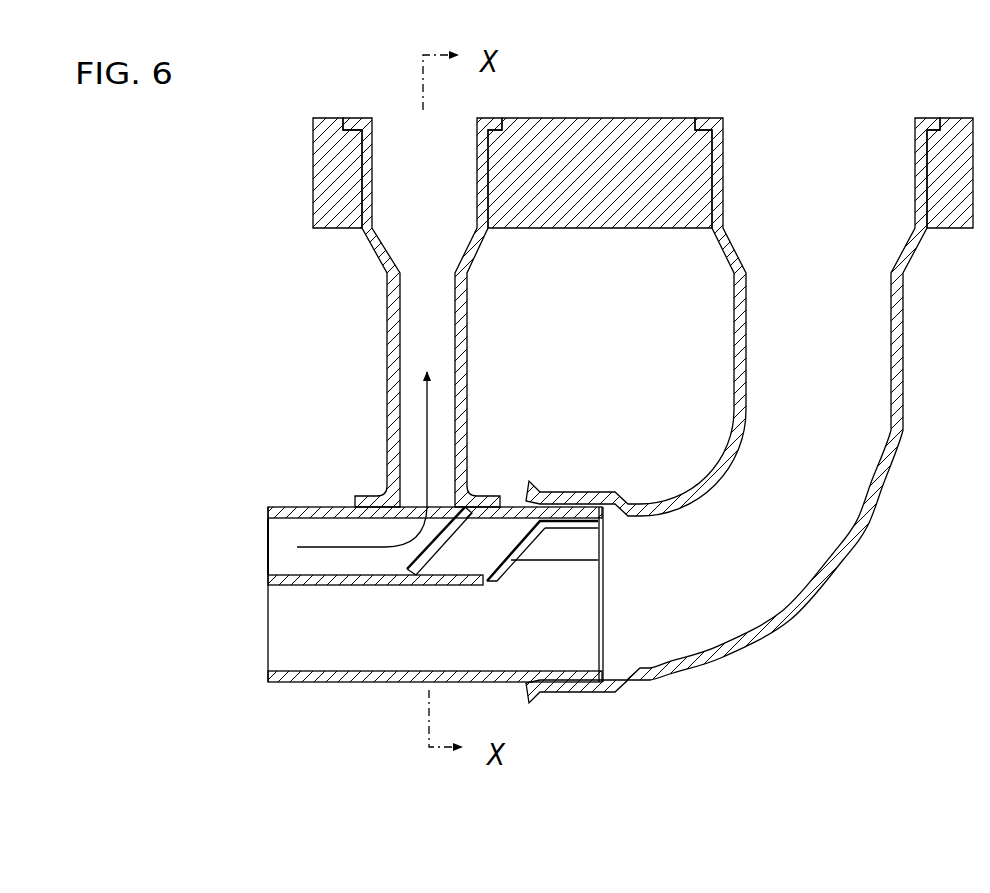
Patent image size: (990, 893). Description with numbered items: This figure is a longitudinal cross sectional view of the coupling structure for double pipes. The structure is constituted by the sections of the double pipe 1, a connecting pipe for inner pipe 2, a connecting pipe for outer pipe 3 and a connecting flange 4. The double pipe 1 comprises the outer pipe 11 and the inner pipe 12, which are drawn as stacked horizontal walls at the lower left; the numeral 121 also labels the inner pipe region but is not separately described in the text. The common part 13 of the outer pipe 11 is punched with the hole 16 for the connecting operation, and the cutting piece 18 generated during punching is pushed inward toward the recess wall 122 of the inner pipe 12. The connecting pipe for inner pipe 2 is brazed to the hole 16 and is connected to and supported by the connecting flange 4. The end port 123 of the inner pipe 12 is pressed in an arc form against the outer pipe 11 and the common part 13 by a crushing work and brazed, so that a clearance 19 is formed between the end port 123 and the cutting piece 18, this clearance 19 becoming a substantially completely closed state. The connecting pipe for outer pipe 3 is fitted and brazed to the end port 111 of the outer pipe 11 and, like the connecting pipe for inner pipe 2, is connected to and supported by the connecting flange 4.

The double pipe 1 is at (258, 492).
The connecting pipe for inner pipe 2 is at (387, 314).
The connecting pipe for outer pipe 3 is at (883, 517).
The connecting flange 4 is at (608, 118).
The outer pipe 11 is at (458, 654).
The inner pipe 12 is at (412, 552).
The common part 13 is at (312, 506).
The hole 16 is at (438, 499).
The cutting piece 18 is at (443, 555).
The clearance 19 is at (490, 553).
The end port of the outer pipe 111 is at (604, 608).
The upper passage 121 is at (267, 533).
The recess wall 122 is at (327, 587).
The end port of the inner pipe 123 is at (603, 528).